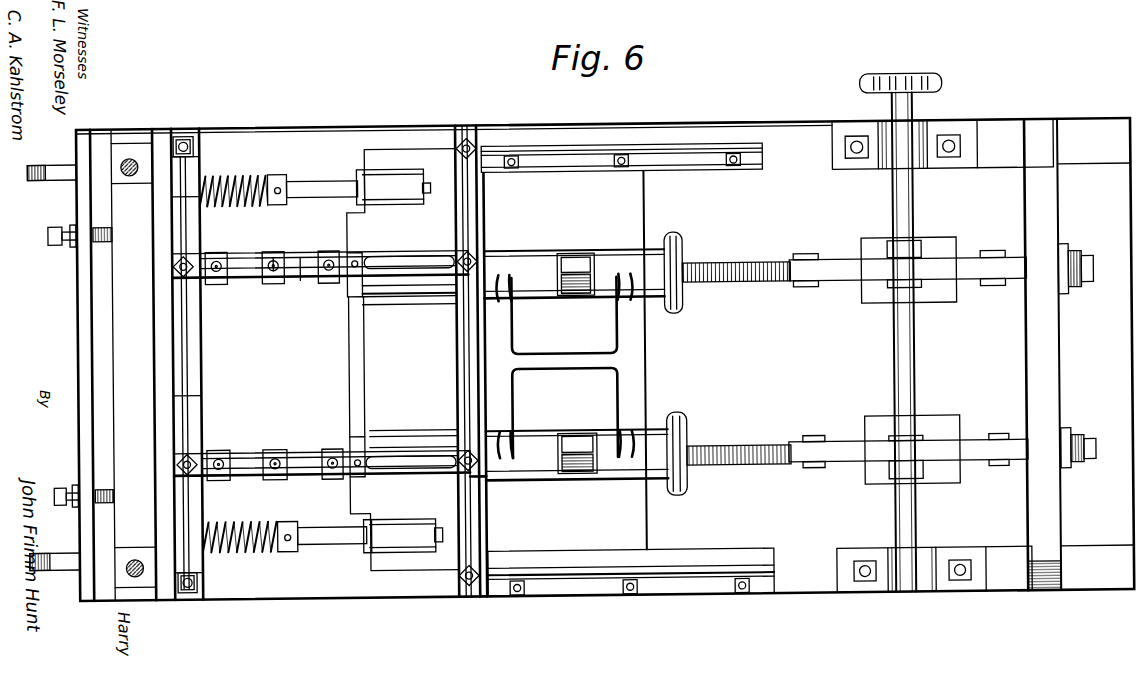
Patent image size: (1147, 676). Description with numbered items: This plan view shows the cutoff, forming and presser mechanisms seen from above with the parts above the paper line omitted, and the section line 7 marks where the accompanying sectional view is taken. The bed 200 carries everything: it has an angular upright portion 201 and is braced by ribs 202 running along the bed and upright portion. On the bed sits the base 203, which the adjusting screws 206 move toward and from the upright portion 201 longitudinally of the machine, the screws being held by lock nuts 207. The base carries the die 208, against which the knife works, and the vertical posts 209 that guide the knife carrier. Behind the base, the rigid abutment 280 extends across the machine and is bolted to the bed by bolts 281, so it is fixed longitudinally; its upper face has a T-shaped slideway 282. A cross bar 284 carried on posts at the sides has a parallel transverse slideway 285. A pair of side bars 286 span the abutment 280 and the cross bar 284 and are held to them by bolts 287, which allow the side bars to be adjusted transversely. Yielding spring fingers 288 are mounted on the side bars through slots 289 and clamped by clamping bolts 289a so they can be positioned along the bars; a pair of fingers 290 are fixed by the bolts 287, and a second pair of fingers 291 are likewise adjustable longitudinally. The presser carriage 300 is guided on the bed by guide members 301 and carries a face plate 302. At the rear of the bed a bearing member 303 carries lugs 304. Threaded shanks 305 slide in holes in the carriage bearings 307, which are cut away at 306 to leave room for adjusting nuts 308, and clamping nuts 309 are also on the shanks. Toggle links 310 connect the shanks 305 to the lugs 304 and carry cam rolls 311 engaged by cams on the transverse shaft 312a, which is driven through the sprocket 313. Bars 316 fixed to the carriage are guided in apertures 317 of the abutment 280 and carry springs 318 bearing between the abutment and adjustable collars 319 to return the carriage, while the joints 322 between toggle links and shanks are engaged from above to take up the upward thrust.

The section line 7— 7 is at (197, 113).
The bed 200 is at (328, 601).
The angular upright portion 201 is at (57, 366).
The ribs 202 is at (52, 165).
The base 203 is at (121, 152).
The adjusting screws 206 is at (57, 227).
The lock nuts 207 is at (70, 246).
The die 208 is at (133, 364).
The vertical posts 209 is at (135, 176).
The rigid abutment 280 is at (201, 366).
The bolts 281 is at (187, 597).
The T-shaped groove or slideway 282 is at (200, 398).
The cross bar 284 is at (486, 540).
The T-shaped groove or slideway 285 is at (470, 220).
The side bars 286 is at (304, 258).
The bolts 287 is at (212, 478).
The yielding spring fingers 288 is at (330, 449).
The slots 289 is at (238, 258).
The clamping bolts 289a is at (272, 276).
The fingers 290 is at (198, 288).
The fingers 291 is at (301, 300).
The carriage 300 is at (643, 218).
The guide members 301 is at (712, 164).
The face plate 302 is at (372, 378).
The bearing member 303 is at (1058, 373).
The lugs 304 is at (1013, 266).
The threaded shanks 305 is at (745, 271).
The cut-away 306 is at (587, 259).
The bearings 307 is at (620, 251).
The adjusting nuts 308 is at (576, 300).
The clamping nuts 309 is at (686, 256).
The toggle links 310 is at (840, 268).
The cam rolls 311 is at (922, 254).
The shaft 312a is at (914, 368).
The sprocket 313 is at (943, 88).
The bars 316 is at (335, 184).
The apertures 317 is at (208, 170).
The springs 318 is at (252, 180).
The adjustable collars 319 is at (285, 555).
The joints 322 is at (808, 296).